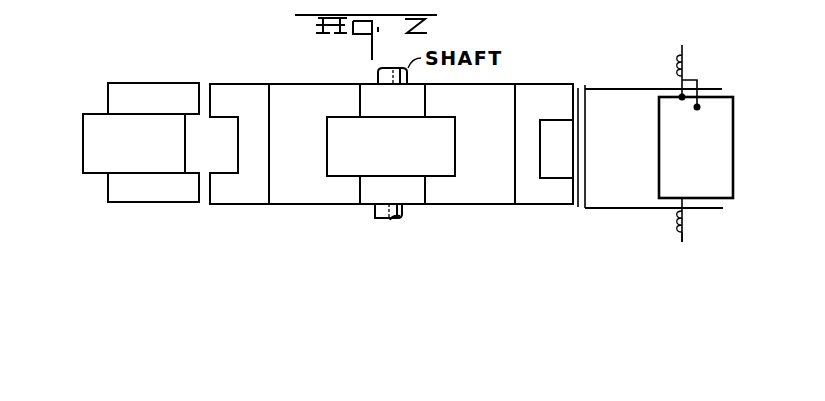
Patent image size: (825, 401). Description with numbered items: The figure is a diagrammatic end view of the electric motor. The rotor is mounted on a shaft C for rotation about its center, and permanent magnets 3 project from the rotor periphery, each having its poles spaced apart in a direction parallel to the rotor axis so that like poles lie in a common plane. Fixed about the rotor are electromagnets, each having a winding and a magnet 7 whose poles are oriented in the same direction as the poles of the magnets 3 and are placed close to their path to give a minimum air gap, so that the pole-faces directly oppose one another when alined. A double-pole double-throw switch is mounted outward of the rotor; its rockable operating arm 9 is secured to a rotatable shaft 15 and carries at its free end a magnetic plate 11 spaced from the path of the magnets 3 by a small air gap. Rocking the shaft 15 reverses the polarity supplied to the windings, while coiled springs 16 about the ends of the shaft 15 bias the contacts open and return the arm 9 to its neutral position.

The permanent magnet 3 is at (255, 98).
The magnet 7 is at (178, 97).
The rockable operating arm 9 is at (607, 200).
The magnetic plate 11 is at (586, 88).
The rotatable shaft 15 is at (683, 237).
The coiled spring 16 is at (687, 66).
The shaft C is at (390, 220).